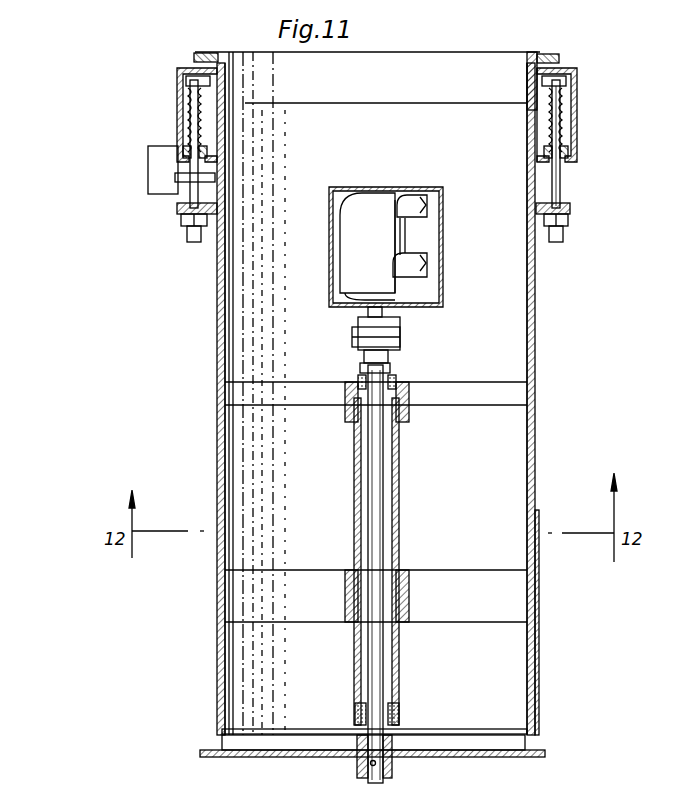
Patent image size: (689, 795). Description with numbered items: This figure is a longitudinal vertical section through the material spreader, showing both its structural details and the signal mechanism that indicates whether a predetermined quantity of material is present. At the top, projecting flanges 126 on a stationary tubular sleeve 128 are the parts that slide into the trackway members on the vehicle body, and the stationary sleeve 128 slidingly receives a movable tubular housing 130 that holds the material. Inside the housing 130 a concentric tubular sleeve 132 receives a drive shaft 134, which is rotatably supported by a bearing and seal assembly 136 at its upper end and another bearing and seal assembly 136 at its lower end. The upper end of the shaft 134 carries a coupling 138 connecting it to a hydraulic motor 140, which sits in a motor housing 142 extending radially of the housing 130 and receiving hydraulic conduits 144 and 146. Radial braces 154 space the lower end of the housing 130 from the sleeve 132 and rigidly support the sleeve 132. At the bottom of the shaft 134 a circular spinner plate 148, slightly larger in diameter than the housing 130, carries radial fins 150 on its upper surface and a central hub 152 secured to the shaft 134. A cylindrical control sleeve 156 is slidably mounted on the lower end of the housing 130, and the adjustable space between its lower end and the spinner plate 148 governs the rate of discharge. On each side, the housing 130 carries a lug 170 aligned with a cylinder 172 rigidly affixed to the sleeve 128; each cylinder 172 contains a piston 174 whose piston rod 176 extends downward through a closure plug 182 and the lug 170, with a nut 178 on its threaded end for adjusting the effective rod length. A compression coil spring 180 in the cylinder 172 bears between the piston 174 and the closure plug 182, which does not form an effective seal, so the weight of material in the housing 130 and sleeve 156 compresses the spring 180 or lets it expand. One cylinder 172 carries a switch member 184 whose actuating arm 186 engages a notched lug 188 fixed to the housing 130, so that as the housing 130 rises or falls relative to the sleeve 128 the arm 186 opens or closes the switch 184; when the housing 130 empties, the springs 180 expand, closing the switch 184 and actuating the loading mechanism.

The projecting flanges 126 is at (561, 58).
The stationary tubular sleeve 128 is at (532, 76).
The tubular housing 130 is at (532, 305).
The tubular sleeve 132 is at (399, 492).
The drive shaft 134 is at (378, 465).
The bearing and seal assembly 136 is at (400, 382).
The coupling 138 is at (402, 332).
The hydraulic motor 140 is at (373, 215).
The motor housing 142 is at (428, 189).
The hydraulic conduit 144 is at (420, 208).
The hydraulic conduit 146 is at (423, 265).
The spinner plate 148 is at (320, 757).
The radial fins 150 is at (225, 732).
The central hub 152 is at (358, 770).
The radial braces 154 is at (296, 578).
The control sleeve 156 is at (539, 522).
The lugs 170 is at (565, 208).
The cylinder 172 is at (577, 98).
The piston 174 is at (571, 80).
The piston rod 176 is at (560, 176).
The nut 178 is at (568, 222).
The compression coil spring 180 is at (566, 125).
The closure plug 182 is at (565, 150).
The switch member 184 is at (160, 180).
The actuating arm 186 is at (183, 177).
The notched lug 188 is at (216, 172).